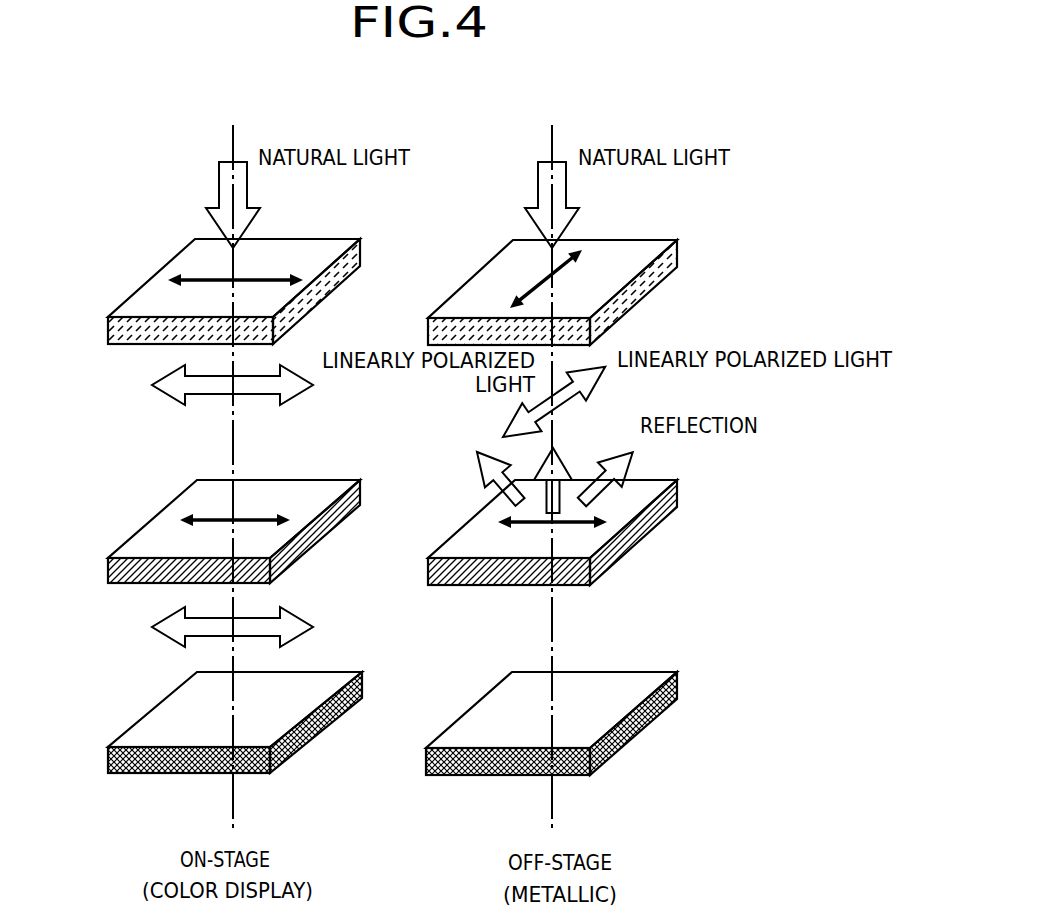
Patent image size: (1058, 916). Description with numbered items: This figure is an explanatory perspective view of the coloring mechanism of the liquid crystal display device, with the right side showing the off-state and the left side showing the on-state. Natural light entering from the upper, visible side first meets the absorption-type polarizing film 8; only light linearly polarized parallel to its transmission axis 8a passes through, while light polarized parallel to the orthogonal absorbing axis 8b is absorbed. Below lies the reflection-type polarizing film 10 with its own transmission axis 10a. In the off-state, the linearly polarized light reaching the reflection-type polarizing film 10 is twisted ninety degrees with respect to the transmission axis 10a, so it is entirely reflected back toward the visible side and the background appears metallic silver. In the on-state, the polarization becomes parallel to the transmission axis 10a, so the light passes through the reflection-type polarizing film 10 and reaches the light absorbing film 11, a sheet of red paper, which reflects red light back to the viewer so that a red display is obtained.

The absorption-type polarizing film 8 is at (122, 330).
The transmission axis 8a is at (533, 287).
The absorbing axis 8b is at (203, 277).
The reflection-type polarizing film 10 is at (137, 566).
The transmission axis 10a is at (205, 513).
The light absorbing film 11 is at (148, 763).